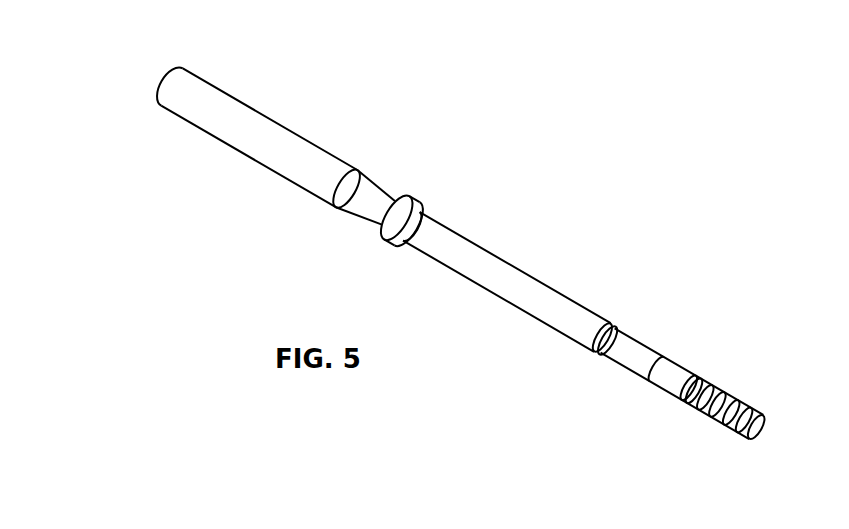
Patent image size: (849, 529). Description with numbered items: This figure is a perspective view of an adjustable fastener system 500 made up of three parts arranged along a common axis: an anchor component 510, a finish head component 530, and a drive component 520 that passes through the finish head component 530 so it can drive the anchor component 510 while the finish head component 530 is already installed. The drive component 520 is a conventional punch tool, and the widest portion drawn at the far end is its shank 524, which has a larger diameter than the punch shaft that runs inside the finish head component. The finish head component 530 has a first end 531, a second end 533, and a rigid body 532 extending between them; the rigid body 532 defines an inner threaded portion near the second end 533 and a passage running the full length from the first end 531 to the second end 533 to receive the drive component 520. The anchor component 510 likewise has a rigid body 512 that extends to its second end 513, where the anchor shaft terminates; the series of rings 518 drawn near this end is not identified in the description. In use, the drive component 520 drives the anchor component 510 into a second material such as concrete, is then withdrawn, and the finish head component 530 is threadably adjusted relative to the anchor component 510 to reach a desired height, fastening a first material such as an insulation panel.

The adjustable fastener system 500 is at (200, 36).
The anchor component 510 is at (651, 428).
The rigid body 512 is at (645, 365).
The second end 513 is at (761, 429).
The rings / markers 518 is at (708, 401).
The drive component 520 is at (233, 194).
The shank 524 is at (192, 116).
The finish head component 530 is at (471, 319).
The first end 531 is at (381, 226).
The rigid body 532 is at (518, 306).
The second end 533 is at (604, 352).